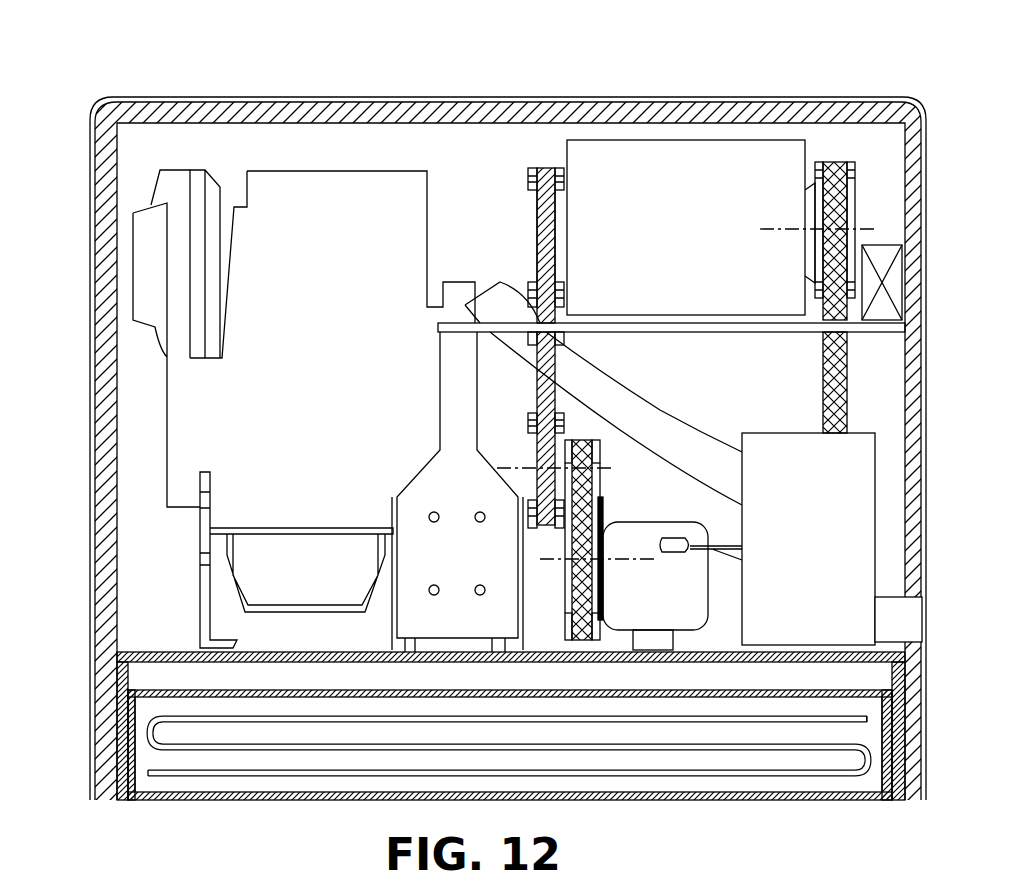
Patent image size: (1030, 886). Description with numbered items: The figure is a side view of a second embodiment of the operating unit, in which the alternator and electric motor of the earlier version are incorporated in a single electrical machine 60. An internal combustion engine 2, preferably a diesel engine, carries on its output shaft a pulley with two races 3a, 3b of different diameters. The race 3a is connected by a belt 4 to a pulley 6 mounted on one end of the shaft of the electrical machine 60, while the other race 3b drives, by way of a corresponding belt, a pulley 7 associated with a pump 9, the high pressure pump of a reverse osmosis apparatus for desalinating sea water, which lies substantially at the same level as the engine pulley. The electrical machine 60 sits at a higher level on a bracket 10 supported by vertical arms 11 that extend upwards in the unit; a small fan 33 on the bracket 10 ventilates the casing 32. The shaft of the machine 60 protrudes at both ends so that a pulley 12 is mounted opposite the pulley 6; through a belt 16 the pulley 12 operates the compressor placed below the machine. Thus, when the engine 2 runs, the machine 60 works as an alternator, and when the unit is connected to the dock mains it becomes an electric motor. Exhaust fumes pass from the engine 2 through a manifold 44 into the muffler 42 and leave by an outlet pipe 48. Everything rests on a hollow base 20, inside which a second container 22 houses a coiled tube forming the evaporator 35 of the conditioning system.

The casing 32 is at (289, 96).
The belt 4 is at (547, 168).
The pulley 6 is at (530, 207).
The electrical machine 60 is at (721, 227).
The pulley 12 is at (847, 187).
The small fan 33 is at (900, 303).
The internal combustion engine 2 is at (304, 409).
The manifold 44 is at (625, 392).
The bracket 10 is at (766, 333).
The belt 16 is at (848, 375).
The race 3a is at (558, 422).
The race 3b is at (600, 440).
The vertical arms 11 is at (457, 492).
The muffler 42 is at (808, 539).
The pump 9 is at (641, 586).
The pulley 7 is at (567, 618).
The outlet pipe 48 is at (890, 616).
The base 20 is at (110, 770).
The evaporator 35 is at (232, 749).
The second container 22 is at (370, 800).